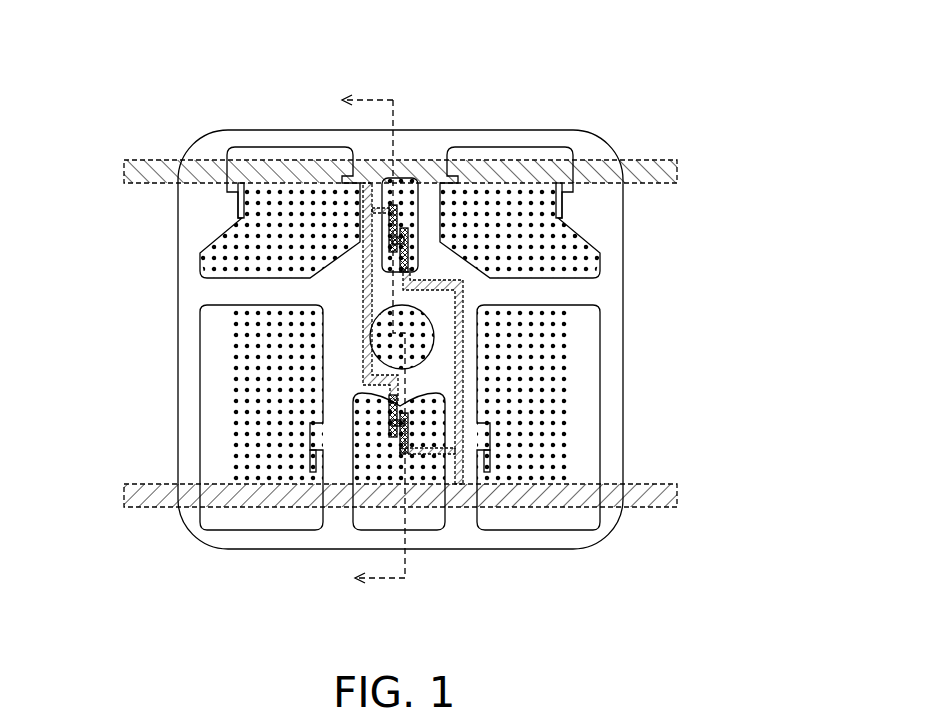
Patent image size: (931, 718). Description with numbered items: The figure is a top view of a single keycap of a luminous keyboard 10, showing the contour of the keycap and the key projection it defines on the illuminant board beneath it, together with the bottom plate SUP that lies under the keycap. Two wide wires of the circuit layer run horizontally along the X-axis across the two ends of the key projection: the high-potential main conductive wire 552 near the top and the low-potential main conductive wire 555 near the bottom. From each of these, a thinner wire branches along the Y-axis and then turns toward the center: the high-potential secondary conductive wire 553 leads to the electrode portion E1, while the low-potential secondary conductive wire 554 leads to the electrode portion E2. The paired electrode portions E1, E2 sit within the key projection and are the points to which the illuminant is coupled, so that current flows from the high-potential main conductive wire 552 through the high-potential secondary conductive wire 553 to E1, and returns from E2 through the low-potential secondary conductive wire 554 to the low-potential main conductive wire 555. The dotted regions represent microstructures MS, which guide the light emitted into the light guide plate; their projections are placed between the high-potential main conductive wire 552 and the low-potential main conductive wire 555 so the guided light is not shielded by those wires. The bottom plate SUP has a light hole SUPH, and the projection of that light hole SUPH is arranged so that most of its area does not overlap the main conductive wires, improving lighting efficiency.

The luminous keyboard 10 is at (85, 38).
The bottom plate SUP is at (439, 333).
The light hole SUPH is at (583, 233).
The high-potential main conductive wire 552 is at (548, 172).
The high-potential secondary conductive wire 553 is at (357, 200).
The low-potential secondary conductive wire 554 is at (460, 403).
The low-potential main conductive wire 555 is at (545, 500).
The microstructures MS is at (567, 337).
The electrode portion E1 is at (398, 212).
The electrode portion E2 is at (410, 245).